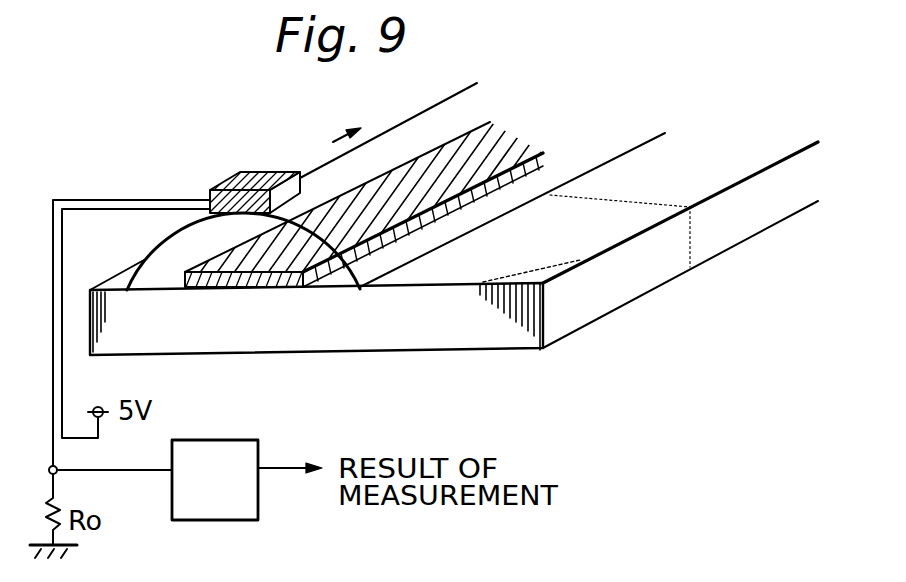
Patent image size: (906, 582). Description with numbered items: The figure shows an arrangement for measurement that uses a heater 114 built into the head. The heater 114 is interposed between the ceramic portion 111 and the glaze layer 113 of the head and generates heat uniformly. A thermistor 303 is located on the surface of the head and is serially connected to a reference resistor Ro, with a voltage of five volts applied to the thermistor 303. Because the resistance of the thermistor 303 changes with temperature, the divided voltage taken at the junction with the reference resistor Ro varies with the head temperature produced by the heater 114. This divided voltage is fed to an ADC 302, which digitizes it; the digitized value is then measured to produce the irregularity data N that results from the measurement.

The ceramic portion 111 is at (185, 318).
The glaze layer 113 is at (176, 250).
The heater 114 is at (277, 290).
The ADC 302 is at (253, 521).
The thermistor 303 is at (257, 174).